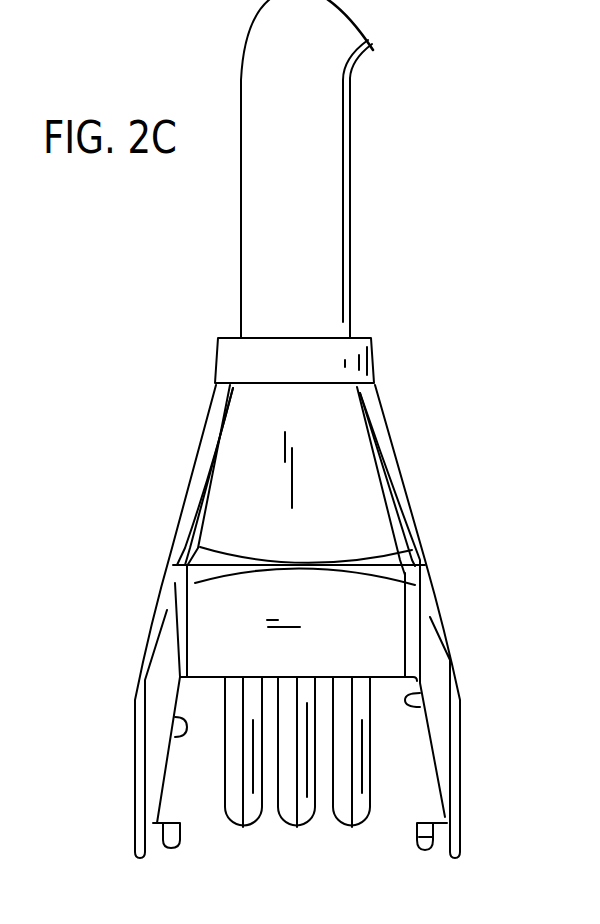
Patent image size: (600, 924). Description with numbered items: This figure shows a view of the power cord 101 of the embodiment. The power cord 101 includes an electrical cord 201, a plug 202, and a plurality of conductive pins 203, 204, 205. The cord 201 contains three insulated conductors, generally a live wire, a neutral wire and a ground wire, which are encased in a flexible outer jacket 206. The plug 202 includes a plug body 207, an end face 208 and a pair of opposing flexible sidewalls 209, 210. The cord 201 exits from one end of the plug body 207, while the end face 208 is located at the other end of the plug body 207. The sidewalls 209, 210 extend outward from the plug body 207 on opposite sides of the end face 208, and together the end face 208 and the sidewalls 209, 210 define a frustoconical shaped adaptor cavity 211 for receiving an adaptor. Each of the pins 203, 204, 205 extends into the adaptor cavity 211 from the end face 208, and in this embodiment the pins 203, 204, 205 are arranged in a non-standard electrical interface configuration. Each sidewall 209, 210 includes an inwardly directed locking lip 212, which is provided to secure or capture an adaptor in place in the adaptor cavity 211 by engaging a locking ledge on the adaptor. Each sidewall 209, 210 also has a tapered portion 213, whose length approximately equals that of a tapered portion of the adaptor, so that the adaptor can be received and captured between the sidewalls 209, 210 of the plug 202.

The power cord 101 is at (104, 332).
The electrical cord 201 is at (350, 175).
The flexible outer jacket 206 is at (297, 297).
The plug body 207 is at (352, 497).
The plug 202 is at (428, 573).
The end face 208 is at (380, 683).
The conductive pin 203 is at (244, 828).
The conductive pin 204 is at (352, 828).
The conductive pin 205 is at (297, 828).
The flexible sidewall 209 is at (153, 755).
The flexible sidewall 210 is at (438, 760).
The adaptor cavity 211 is at (392, 785).
The locking lip 212 is at (150, 849).
The tapered portion 213 is at (178, 717).